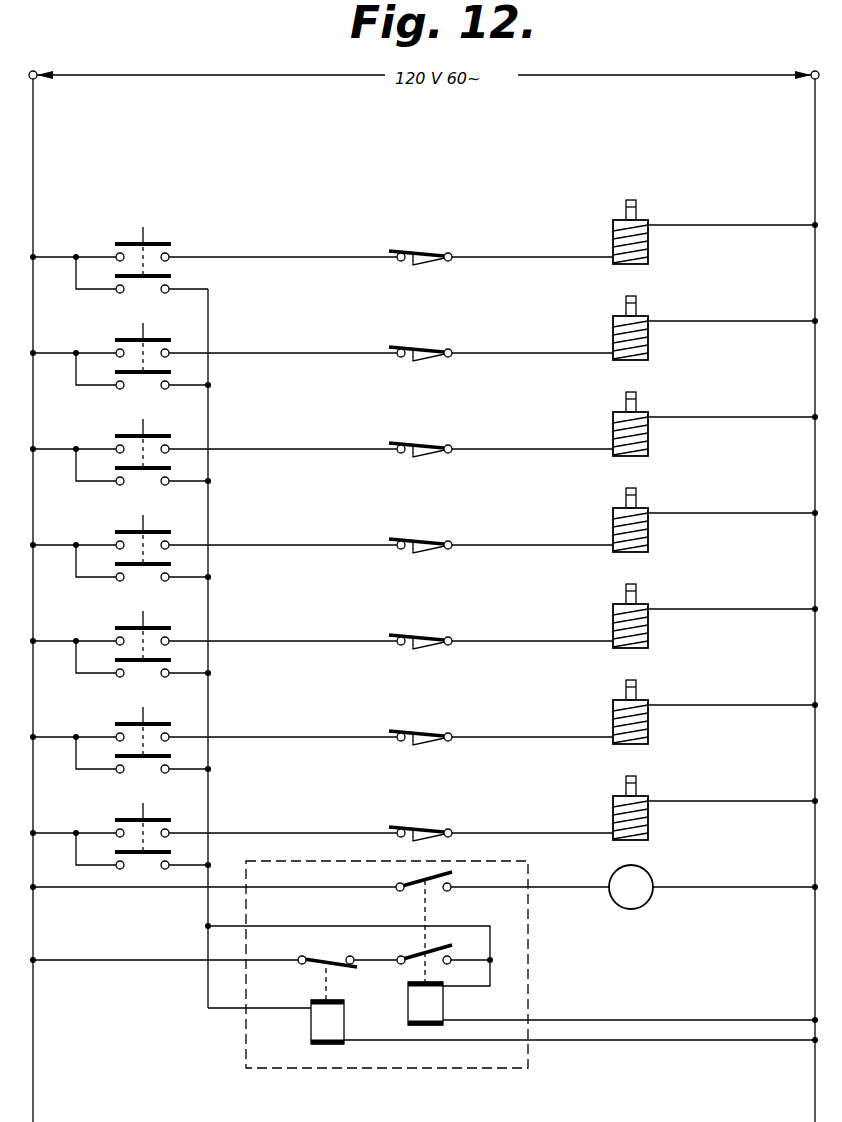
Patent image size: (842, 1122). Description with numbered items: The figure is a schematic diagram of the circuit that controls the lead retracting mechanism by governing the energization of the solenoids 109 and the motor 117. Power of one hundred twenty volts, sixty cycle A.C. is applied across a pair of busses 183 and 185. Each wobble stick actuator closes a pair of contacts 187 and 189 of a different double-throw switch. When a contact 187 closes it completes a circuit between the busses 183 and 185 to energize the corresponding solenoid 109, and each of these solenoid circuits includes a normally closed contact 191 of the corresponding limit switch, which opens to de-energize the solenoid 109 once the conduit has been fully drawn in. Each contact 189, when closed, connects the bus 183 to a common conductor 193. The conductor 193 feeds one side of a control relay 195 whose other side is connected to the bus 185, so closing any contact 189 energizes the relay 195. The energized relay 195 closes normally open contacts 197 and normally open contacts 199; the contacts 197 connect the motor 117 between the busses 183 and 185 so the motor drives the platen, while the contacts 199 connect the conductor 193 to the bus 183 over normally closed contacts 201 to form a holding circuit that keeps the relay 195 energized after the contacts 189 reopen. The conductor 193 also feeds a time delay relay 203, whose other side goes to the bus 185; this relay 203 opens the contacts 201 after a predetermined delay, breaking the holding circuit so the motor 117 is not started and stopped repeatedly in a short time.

The solenoid 109 is at (672, 773).
The motor 117 is at (652, 874).
The bus 183 is at (33, 137).
The bus 185 is at (815, 136).
The contact 187 is at (170, 805).
The contact 189 is at (146, 893).
The normally closed contact 191 is at (410, 828).
The common conductor 193 is at (208, 702).
The control relay 195 is at (408, 1004).
The normally open contacts 197 is at (452, 872).
The normally open contacts 199 is at (447, 946).
The normally closed contacts 201 is at (330, 966).
The time delay relay 203 is at (310, 1020).